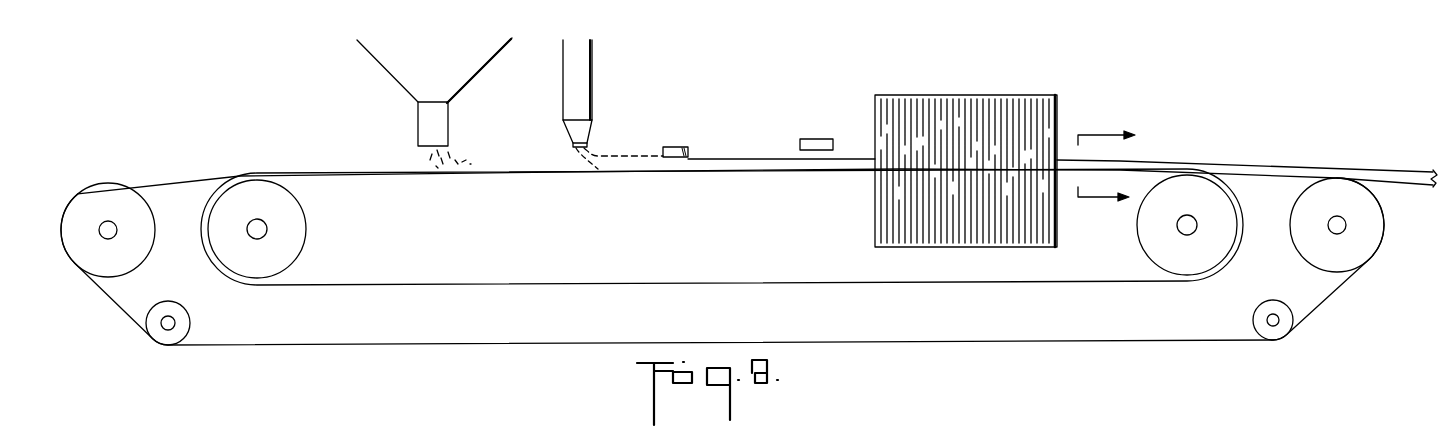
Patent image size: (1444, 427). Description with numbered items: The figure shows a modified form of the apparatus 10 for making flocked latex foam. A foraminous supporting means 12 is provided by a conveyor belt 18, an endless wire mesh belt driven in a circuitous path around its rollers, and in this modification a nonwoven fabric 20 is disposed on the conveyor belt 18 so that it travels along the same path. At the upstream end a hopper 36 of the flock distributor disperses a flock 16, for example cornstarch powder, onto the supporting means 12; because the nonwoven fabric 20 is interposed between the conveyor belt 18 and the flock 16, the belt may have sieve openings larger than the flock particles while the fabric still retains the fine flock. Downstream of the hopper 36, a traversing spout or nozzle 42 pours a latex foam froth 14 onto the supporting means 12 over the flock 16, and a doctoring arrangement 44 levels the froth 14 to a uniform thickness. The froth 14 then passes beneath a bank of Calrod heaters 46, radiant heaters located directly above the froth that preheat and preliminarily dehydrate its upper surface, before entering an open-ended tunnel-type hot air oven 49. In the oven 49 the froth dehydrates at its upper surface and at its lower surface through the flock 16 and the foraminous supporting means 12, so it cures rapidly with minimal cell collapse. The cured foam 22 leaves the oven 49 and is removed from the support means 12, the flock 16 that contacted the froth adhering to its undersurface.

The apparatus 10 is at (1106, 164).
The foraminous supporting means 12 is at (306, 163).
The latex foam froth 14 is at (742, 158).
The flock 16 is at (458, 160).
The conveyor belt 18 is at (227, 186).
The nonwoven fabric 20 is at (188, 184).
The cured foam 22 is at (1285, 165).
The hopper 36 is at (407, 93).
The nozzle 42 is at (593, 110).
The doctoring arrangement 44 is at (685, 145).
The Calrod heaters 46 is at (820, 142).
The hot air oven 49 is at (972, 107).